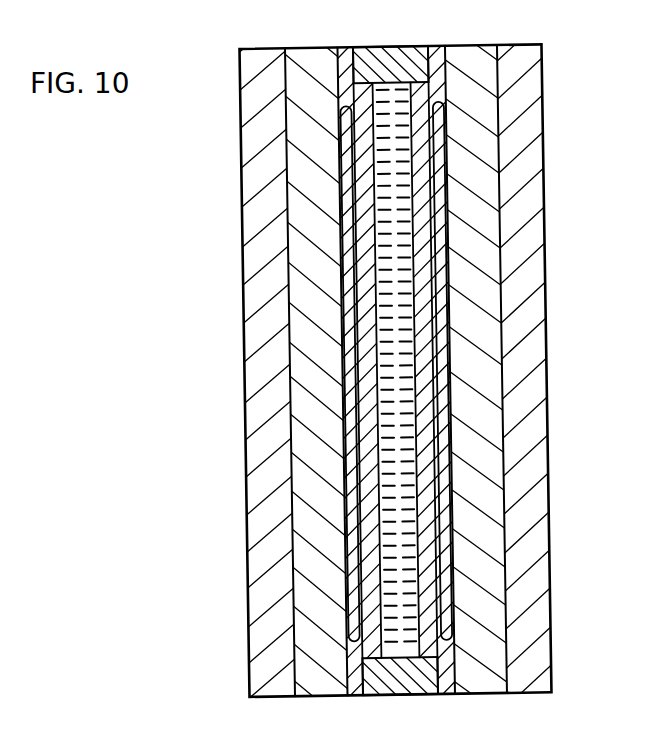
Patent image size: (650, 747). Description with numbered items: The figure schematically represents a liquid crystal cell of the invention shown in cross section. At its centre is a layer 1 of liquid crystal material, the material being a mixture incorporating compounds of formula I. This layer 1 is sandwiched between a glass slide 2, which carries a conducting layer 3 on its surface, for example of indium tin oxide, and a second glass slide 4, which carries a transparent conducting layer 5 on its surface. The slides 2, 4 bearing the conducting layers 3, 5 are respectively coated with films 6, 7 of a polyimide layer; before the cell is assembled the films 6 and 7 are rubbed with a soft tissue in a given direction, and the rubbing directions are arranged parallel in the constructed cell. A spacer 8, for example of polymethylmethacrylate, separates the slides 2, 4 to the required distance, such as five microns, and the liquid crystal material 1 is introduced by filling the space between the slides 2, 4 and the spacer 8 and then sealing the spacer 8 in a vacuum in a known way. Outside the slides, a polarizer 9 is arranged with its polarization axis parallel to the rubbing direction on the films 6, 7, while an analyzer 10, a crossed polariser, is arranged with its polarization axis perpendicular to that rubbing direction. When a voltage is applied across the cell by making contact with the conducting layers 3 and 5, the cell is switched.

The layer of liquid crystal material 1 is at (395, 98).
The glass slide 2 is at (307, 57).
The conducting layer 3 is at (347, 533).
The glass slide 4 is at (483, 52).
The transparent conducting layer 5 is at (445, 302).
The polyimide film 6 is at (360, 417).
The polyimide film 7 is at (430, 407).
The spacer 8 is at (369, 58).
The polarizer 9 is at (260, 257).
The analyzer 10 is at (532, 92).